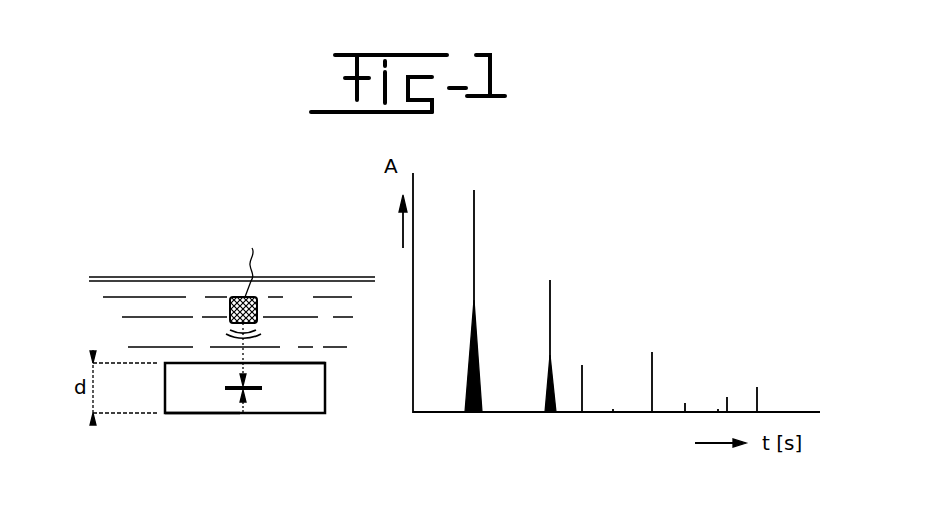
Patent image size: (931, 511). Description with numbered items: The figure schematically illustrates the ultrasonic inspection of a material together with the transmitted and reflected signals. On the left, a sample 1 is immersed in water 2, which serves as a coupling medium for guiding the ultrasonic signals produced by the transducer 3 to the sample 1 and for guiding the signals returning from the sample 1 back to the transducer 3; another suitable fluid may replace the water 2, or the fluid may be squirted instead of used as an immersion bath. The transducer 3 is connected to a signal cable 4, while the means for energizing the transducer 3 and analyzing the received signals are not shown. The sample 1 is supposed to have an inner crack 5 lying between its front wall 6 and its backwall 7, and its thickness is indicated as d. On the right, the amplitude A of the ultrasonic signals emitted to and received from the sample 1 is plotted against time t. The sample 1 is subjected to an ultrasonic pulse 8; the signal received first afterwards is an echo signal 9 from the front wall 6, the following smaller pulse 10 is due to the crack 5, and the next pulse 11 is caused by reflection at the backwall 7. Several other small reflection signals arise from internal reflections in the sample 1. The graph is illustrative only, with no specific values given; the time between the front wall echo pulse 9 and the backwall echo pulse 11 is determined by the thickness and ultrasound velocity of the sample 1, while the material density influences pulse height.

The sample 1 is at (297, 402).
The water 2 is at (138, 308).
The transducer 3 is at (231, 313).
The signal cable 4 is at (245, 261).
The inner crack 5 is at (259, 391).
The front wall 6 is at (311, 362).
The backwall 7 is at (207, 411).
The ultrasonic pulse 8 is at (476, 205).
The echo signal 9 is at (552, 297).
The smaller pulse 10 is at (584, 381).
The backwall echo pulse 11 is at (654, 372).